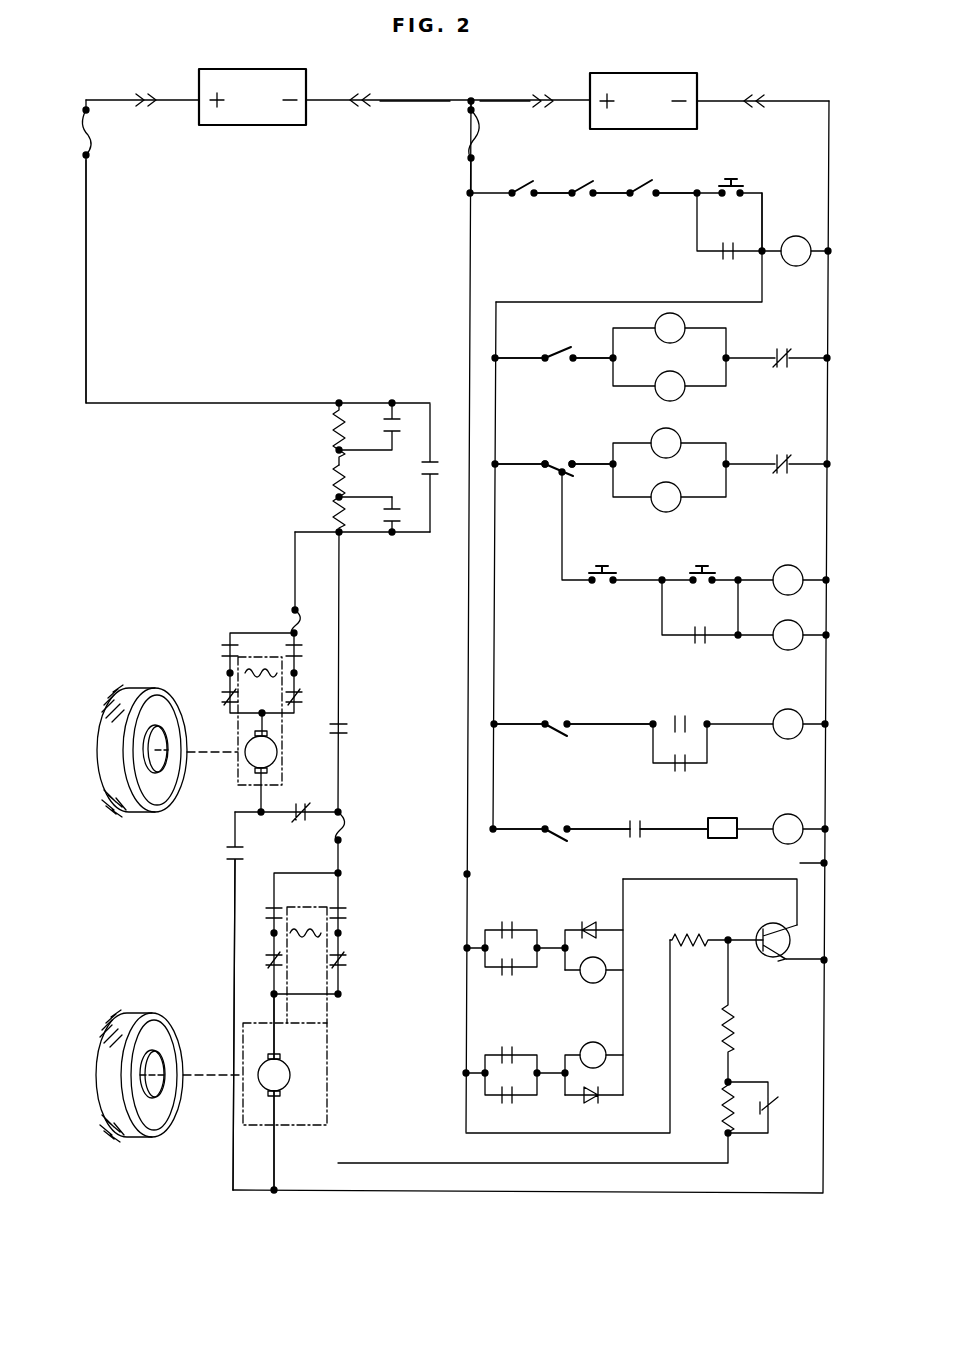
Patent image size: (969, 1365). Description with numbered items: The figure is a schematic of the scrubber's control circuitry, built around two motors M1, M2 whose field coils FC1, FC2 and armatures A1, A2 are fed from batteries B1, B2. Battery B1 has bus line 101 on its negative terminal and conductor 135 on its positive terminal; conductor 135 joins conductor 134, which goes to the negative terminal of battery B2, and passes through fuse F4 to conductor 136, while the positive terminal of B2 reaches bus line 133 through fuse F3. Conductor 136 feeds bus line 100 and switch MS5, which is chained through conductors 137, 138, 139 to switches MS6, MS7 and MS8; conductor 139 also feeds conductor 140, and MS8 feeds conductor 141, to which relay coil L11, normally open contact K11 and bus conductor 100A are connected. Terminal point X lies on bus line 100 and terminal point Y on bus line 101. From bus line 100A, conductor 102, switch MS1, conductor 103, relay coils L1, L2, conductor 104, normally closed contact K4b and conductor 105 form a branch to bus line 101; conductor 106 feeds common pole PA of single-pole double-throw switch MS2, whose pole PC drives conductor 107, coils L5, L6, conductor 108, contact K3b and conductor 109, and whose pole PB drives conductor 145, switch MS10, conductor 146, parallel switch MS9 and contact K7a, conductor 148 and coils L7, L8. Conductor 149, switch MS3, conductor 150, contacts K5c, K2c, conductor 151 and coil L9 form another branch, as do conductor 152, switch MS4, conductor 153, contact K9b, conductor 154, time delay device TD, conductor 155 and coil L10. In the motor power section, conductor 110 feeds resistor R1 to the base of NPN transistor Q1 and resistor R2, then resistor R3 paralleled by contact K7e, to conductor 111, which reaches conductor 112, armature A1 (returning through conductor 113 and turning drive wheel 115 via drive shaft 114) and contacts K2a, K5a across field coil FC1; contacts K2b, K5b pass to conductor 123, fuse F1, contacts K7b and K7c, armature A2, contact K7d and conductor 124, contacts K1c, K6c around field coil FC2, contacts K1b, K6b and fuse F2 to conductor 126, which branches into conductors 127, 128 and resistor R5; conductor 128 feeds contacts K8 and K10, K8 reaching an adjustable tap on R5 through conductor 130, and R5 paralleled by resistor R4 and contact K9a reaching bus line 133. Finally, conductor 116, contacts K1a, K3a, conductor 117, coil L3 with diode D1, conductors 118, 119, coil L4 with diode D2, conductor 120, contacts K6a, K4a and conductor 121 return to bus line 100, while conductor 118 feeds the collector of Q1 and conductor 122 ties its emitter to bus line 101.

The battery B1 is at (641, 94).
The battery B2 is at (253, 128).
The fuse F1 is at (346, 826).
The fuse F2 is at (290, 612).
The fuse F3 is at (92, 136).
The fuse F4 is at (472, 128).
The bus line 100 is at (468, 263).
The bus conductor 100A is at (603, 302).
The bus line 101 is at (828, 130).
The conductor 102 is at (525, 367).
The conductor 103 is at (594, 368).
The conductor 104 is at (745, 358).
The conductor 105 is at (805, 345).
The conductor 106 is at (515, 470).
The conductor 107 is at (596, 472).
The conductor 108 is at (750, 464).
The conductor 109 is at (808, 452).
The conductor 110 is at (640, 1053).
The conductor 111 is at (598, 1163).
The conductor 112 is at (278, 1042).
The conductor 113 is at (277, 1168).
The drive shaft 114 is at (212, 1080).
The drive wheel 115 is at (150, 1138).
The conductor 116 is at (476, 940).
The conductor 117 is at (548, 945).
The conductor 118 is at (703, 882).
The conductor 119 is at (622, 1015).
The conductor 120 is at (546, 1068).
The conductor 121 is at (476, 1078).
The conductor 122 is at (808, 962).
The conductor 123 is at (340, 852).
The conductor 124 is at (232, 945).
The conductor 126 is at (292, 541).
The conductor 127 is at (341, 590).
The conductor 128 is at (375, 540).
The conductor 130 is at (362, 492).
The bus line 133 is at (86, 212).
The conductor 134 is at (412, 103).
The conductor 135 is at (510, 103).
The conductor 136 is at (468, 167).
The conductor 137 is at (548, 195).
The conductor 138 is at (612, 195).
The conductor 139 is at (678, 192).
The conductor 140 is at (697, 233).
The conductor 141 is at (762, 228).
The conductor 145 is at (561, 552).
The conductor 146 is at (640, 586).
The conductor 148 is at (738, 610).
The conductor 149 is at (522, 722).
The conductor 150 is at (598, 722).
The conductor 151 is at (752, 736).
The conductor 152 is at (514, 828).
The conductor 153 is at (592, 828).
The conductor 154 is at (678, 836).
The conductor 155 is at (756, 836).
The switch MS1 is at (558, 348).
The single-pole double-throw switch MS2 is at (569, 441).
The switch MS3 is at (556, 735).
The switch MS4 is at (556, 841).
The switch MS5 is at (523, 183).
The switch MS6 is at (587, 186).
The switch MS7 is at (645, 183).
The switch MS8 is at (735, 180).
The switch MS9 is at (705, 565).
The switch MS10 is at (612, 558).
The common pole PA is at (546, 463).
The pole PB is at (558, 475).
The pole PC is at (574, 463).
The relay coil L1 is at (668, 341).
The relay coil L2 is at (677, 379).
The relay coil L3 is at (594, 983).
The relay coil L4 is at (592, 1042).
The relay coil L5 is at (660, 455).
The relay coil L6 is at (673, 500).
The relay coil L7 is at (790, 566).
The relay coil L8 is at (796, 621).
The relay coil L9 is at (790, 709).
The relay coil L10 is at (790, 814).
The relay coil L11 is at (797, 266).
The normally open relay contact K11 is at (740, 232).
The normally closed relay contact K4b is at (790, 358).
The normally closed relay contact K3b is at (790, 465).
The normally open relay contact K7a is at (706, 638).
The normally open relay contact K5c is at (688, 726).
The normally open relay contact K2c is at (660, 762).
The normally open relay contact K9b is at (646, 820).
The normally closed relay contact K7e is at (774, 1108).
The normally open relay contact K1a is at (512, 928).
The normally open relay contact K3a is at (512, 970).
The normally open relay contact K6a is at (514, 1056).
The normally open relay contact K4a is at (512, 1098).
The normally open relay contact K9a is at (402, 438).
The normally open relay contact K10 is at (430, 470).
The normally open relay contact K8 is at (388, 508).
The normally open relay contact K6b is at (228, 650).
The normally open relay contact K1b is at (296, 652).
The normally closed relay contact K6c is at (226, 696).
The normally closed relay contact K1c is at (296, 700).
The normally open relay contact K7b is at (350, 730).
The normally closed relay contact K7c is at (312, 797).
The normally open relay contact K7d is at (210, 1001).
The normally open relay contact K5b is at (270, 912).
The normally open relay contact K2b is at (344, 914).
The normally closed relay contact K5a is at (268, 958).
The normally closed relay contact K2a is at (346, 960).
The time delay device TD is at (722, 816).
The terminal point X is at (466, 875).
The terminal point Y is at (803, 865).
The resistor R1 is at (700, 936).
The resistor R2 is at (742, 1013).
The resistor R3 is at (722, 1113).
The resistor R4 is at (336, 430).
The resistor R5 is at (336, 497).
The NPN transistor Q1 is at (768, 957).
The diode D1 is at (592, 922).
The diode D2 is at (598, 1100).
The field coil FC1 is at (305, 933).
The field coil FC2 is at (262, 673).
The armature A1 is at (288, 1068).
The armature A2 is at (277, 752).
The motor M1 is at (332, 1105).
The motor M2 is at (232, 759).